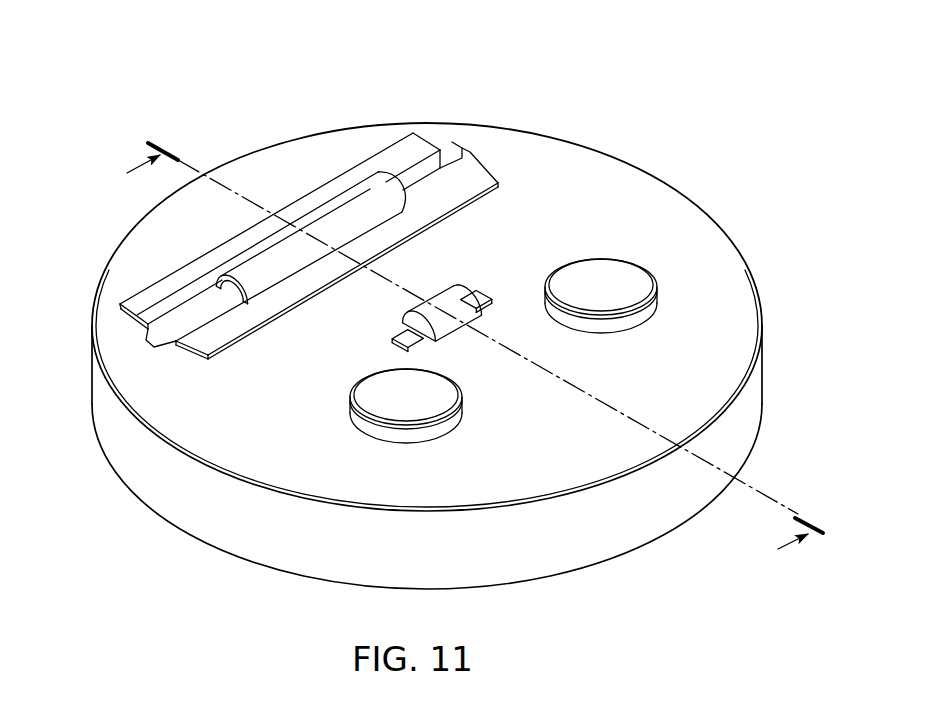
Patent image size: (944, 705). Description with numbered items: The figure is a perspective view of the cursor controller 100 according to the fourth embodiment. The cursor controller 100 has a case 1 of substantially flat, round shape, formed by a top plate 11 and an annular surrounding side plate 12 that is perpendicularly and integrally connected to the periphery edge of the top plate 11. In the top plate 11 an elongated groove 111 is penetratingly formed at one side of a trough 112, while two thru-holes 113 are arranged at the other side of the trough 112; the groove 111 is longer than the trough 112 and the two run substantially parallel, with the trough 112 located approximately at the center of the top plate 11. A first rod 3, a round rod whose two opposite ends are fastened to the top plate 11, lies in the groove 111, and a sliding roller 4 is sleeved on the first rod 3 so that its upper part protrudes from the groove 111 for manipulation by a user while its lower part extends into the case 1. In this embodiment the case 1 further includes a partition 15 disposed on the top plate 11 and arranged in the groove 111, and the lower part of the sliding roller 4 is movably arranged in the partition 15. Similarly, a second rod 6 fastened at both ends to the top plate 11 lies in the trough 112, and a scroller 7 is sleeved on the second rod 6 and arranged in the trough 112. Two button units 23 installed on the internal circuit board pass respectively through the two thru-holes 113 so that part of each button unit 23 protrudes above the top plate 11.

The cursor controller 100 is at (147, 39).
The case 1 is at (668, 182).
The top plate 11 is at (698, 240).
The surrounding side plate 12 is at (738, 430).
The partition 15 is at (388, 160).
The groove 111 is at (442, 152).
The sliding roller 4 is at (330, 213).
The first rod 3 is at (196, 321).
The scroller 7 is at (446, 305).
The second rod 6 is at (397, 336).
The trough 112 is at (483, 300).
The button unit 23 is at (392, 388).
The thru-hole 113 is at (356, 437).